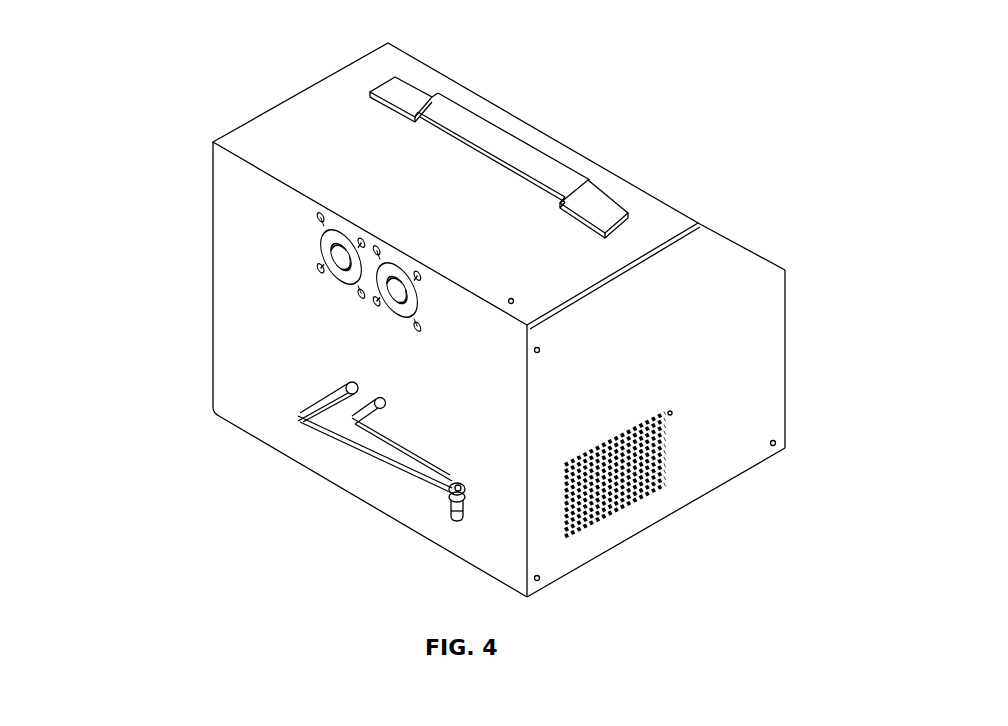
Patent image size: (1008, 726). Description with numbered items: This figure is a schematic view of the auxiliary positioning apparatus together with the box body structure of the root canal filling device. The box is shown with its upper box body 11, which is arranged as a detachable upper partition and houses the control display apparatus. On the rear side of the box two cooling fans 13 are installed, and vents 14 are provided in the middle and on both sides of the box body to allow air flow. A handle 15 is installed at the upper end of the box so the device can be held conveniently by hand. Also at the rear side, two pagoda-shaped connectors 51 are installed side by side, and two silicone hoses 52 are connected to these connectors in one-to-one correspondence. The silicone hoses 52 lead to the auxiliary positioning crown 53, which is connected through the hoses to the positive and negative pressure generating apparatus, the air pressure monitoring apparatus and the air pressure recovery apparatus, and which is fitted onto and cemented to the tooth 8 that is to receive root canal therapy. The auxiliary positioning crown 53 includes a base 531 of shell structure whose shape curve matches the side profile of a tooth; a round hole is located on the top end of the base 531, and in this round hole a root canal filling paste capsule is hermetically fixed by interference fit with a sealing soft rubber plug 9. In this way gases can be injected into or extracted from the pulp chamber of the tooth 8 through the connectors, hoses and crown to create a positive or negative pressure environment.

The upper box body 11 is at (718, 290).
The cooling fan 13 is at (270, 260).
The vent 14 is at (716, 475).
The handle 15 is at (535, 157).
The pagoda-shaped connector 51 is at (233, 357).
The silicone hose 52 is at (263, 426).
The sealing soft rubber plug 9 is at (452, 487).
The auxiliary positioning crown 53 is at (361, 509).
The base 531 is at (548, 545).
The tooth 8 is at (409, 543).